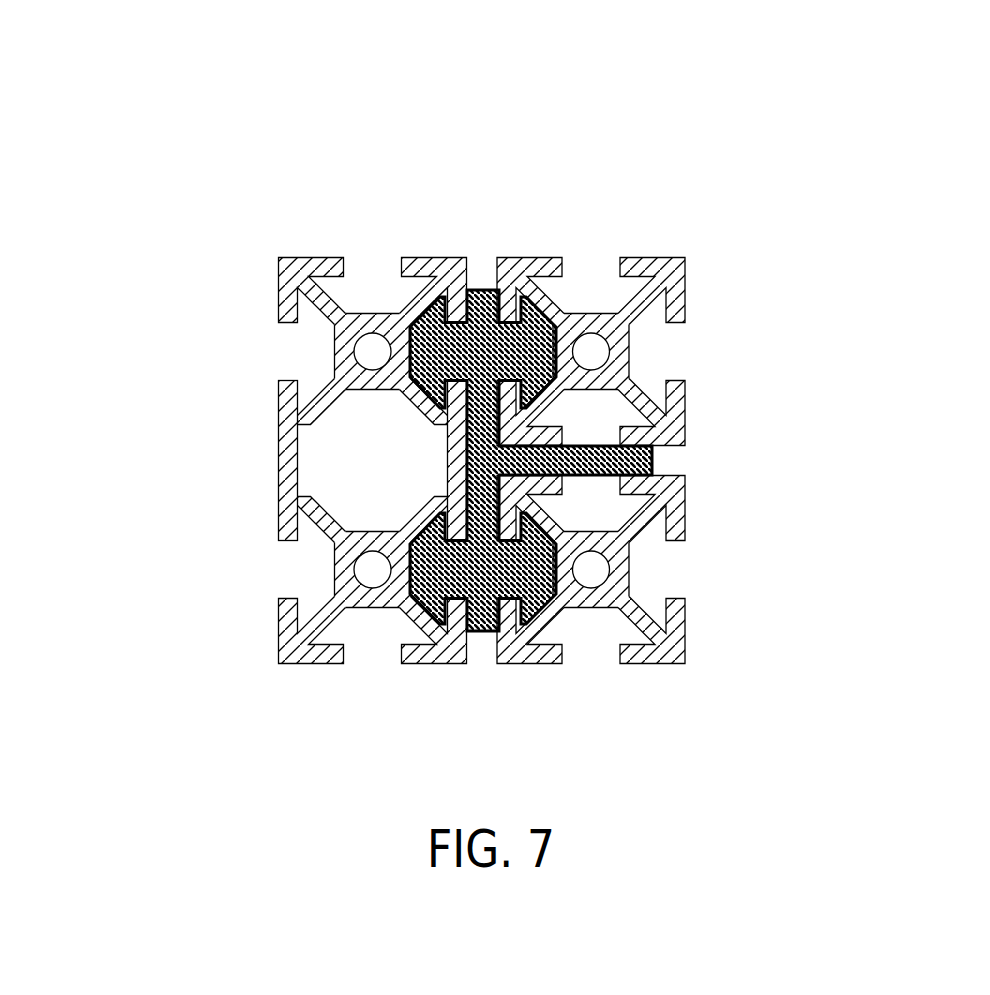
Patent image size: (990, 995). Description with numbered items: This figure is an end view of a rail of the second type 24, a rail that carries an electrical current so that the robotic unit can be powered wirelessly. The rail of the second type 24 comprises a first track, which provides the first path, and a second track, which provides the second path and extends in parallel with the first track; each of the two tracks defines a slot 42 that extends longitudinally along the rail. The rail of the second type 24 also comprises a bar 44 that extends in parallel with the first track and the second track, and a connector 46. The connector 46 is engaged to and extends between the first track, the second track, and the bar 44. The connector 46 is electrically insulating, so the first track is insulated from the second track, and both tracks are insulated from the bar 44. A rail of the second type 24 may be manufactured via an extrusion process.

The second type 24 is at (553, 145).
The bar 44 is at (285, 430).
The slot 42 is at (589, 272).
The connector 46 is at (483, 290).